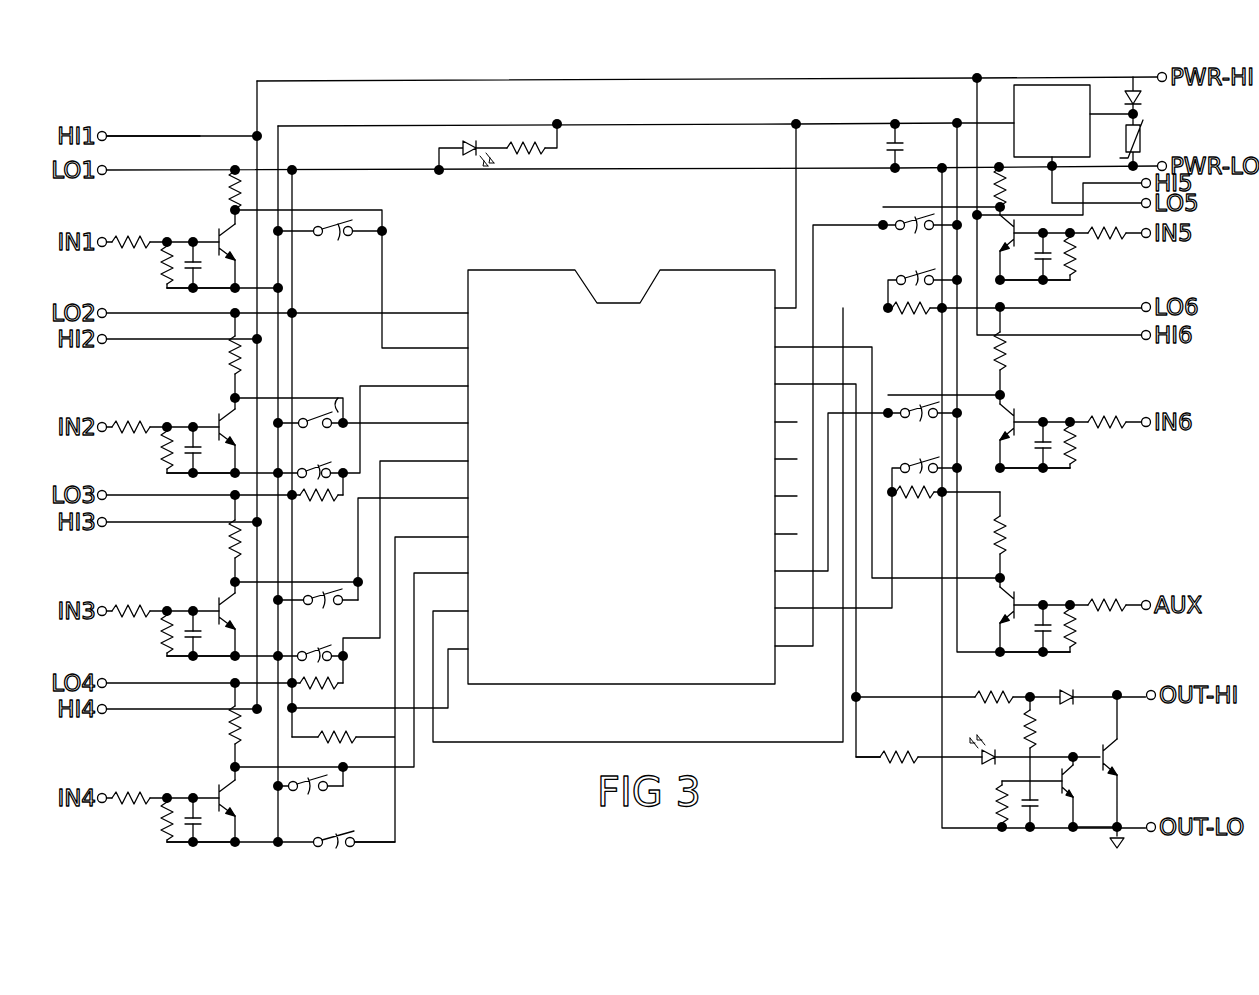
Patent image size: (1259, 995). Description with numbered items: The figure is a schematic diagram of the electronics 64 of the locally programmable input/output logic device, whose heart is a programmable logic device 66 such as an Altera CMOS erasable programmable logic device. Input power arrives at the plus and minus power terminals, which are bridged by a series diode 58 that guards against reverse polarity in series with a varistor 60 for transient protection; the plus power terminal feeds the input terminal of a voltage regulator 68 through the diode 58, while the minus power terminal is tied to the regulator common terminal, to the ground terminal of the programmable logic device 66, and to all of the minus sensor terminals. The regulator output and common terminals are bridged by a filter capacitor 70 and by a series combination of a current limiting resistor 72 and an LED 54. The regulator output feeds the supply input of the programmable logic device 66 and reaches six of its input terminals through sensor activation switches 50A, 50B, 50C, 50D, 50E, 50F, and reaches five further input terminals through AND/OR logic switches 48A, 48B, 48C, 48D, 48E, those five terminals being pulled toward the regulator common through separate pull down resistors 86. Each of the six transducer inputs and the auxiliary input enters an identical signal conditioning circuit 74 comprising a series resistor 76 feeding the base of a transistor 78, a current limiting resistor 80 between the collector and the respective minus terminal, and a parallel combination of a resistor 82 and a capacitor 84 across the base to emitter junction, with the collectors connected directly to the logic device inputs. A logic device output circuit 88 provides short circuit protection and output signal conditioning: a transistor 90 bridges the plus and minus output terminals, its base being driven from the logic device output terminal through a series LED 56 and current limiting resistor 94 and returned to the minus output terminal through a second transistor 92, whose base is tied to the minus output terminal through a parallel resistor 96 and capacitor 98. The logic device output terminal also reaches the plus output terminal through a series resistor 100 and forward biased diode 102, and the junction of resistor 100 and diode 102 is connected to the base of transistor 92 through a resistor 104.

The logic device electronics 64 is at (167, 107).
The LED 54 is at (461, 148).
The current limiting resistor 72 is at (547, 148).
The filter capacitor 70 is at (884, 148).
The voltage regulator 68 is at (1073, 121).
The series diode 58 is at (1142, 96).
The varistor 60 is at (1142, 134).
The programmable logic device 66 is at (621, 477).
The signal conditioning circuit 74 is at (1158, 271).
The series resistor 76 is at (141, 240).
The transistor 78 is at (220, 226).
The current limiting resistor 80 is at (230, 194).
The resistor 82 is at (159, 263).
The capacitor 84 is at (217, 258).
The pull down resistor 86 is at (322, 506).
The sensor activation switch 50A is at (330, 248).
The sensor activation switch 50B is at (315, 397).
The sensor activation switch 50C is at (318, 582).
The sensor activation switch 50D is at (310, 797).
The sensor activation switch 50E is at (907, 236).
The sensor activation switch 50F is at (917, 423).
The AND/OR logic switch 48A is at (312, 454).
The AND/OR logic switch 48B is at (311, 638).
The AND/OR logic switch 48C is at (340, 830).
The AND/OR logic switch 48D is at (900, 275).
The AND/OR logic switch 48E is at (896, 450).
The logic device output circuit 88 is at (1133, 773).
The transistor 90 is at (1119, 748).
The second transistor 92 is at (1070, 790).
The current limiting resistor 94 is at (896, 766).
The resistor 96 is at (996, 806).
The capacitor 98 is at (1050, 804).
The resistor 100 is at (994, 688).
The diode 102 is at (1074, 682).
The resistor 104 is at (1035, 724).
The LED 56 is at (982, 766).